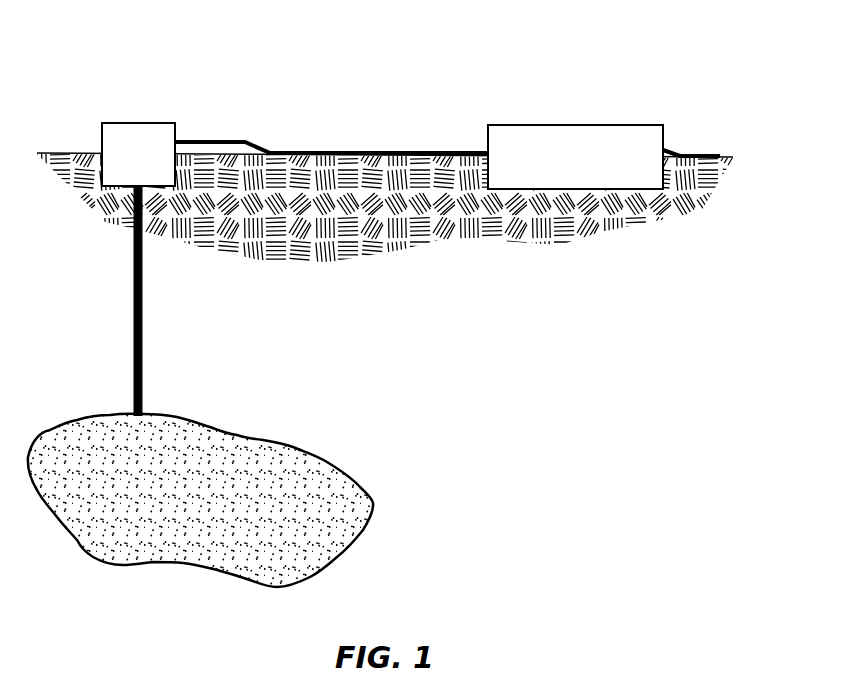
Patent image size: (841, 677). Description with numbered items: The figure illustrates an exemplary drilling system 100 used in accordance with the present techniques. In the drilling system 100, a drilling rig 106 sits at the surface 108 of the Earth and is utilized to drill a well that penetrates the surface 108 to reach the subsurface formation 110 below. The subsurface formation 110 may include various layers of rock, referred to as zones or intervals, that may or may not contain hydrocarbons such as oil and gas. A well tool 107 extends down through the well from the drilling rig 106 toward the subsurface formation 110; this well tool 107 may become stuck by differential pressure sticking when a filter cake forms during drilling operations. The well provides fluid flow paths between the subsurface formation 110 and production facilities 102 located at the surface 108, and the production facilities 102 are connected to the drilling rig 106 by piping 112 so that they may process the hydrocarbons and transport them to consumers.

The drilling system 100 is at (96, 52).
The production facilities 102 is at (588, 124).
The drilling rig 106 is at (157, 122).
The well tool 107 is at (143, 312).
The surface 108 is at (75, 152).
The subsurface formation 110 is at (245, 436).
The pipeline 112 is at (345, 151).